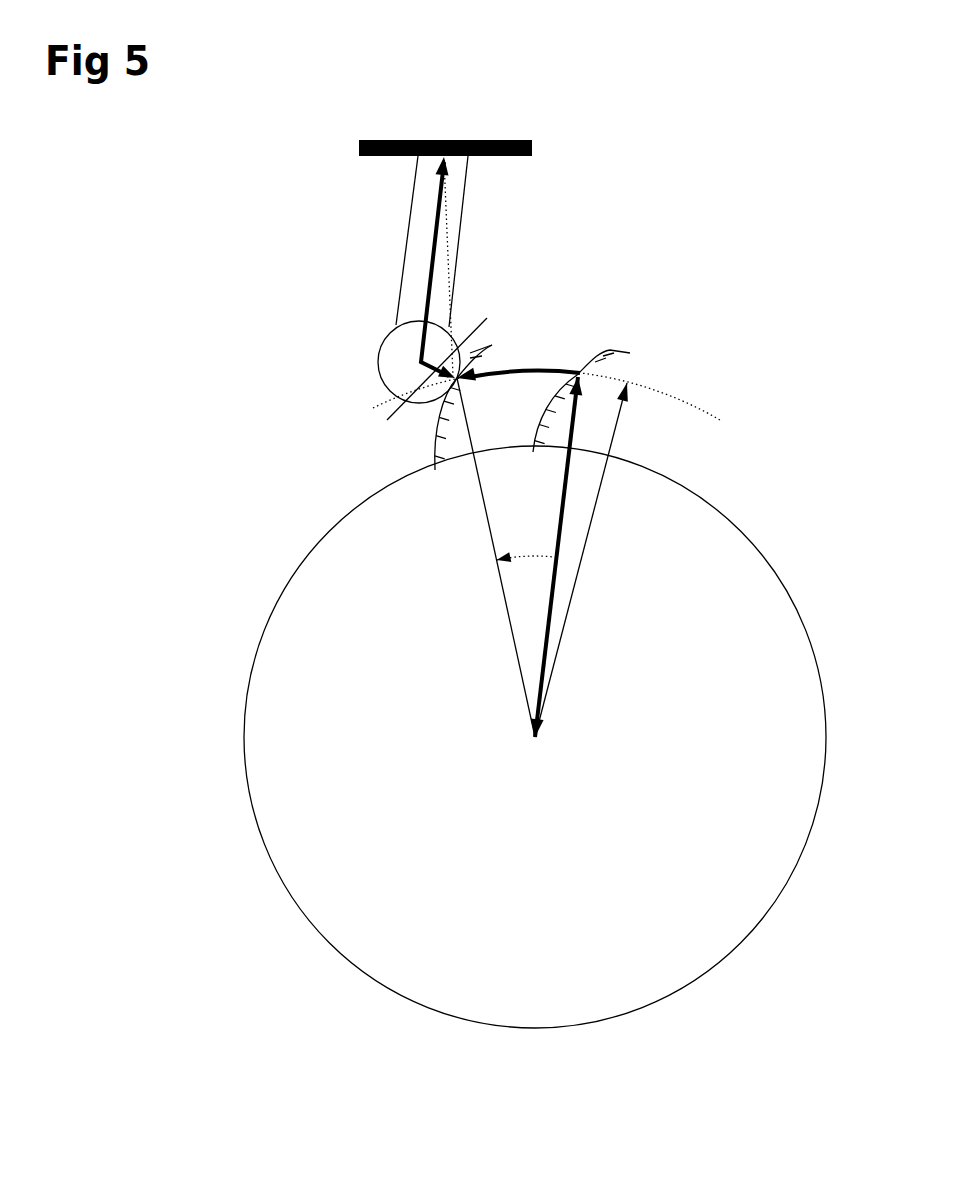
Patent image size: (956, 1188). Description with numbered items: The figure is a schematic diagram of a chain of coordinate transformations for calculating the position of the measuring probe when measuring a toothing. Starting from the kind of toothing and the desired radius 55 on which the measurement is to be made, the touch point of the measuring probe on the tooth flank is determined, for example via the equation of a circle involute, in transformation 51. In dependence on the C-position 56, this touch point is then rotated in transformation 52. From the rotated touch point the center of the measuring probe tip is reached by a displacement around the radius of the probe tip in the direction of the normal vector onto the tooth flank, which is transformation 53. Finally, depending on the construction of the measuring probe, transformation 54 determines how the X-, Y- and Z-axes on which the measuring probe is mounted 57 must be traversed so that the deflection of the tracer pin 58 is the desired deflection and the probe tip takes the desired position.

The transformation 51 is at (556, 580).
The transformation 52 is at (540, 372).
The transformation 53 is at (400, 407).
The transformation 54 is at (428, 277).
The desired radius 55 is at (558, 653).
The C-position 56 is at (537, 553).
The measuring probe mounting 57 is at (440, 160).
The tracer pin 58 is at (487, 318).